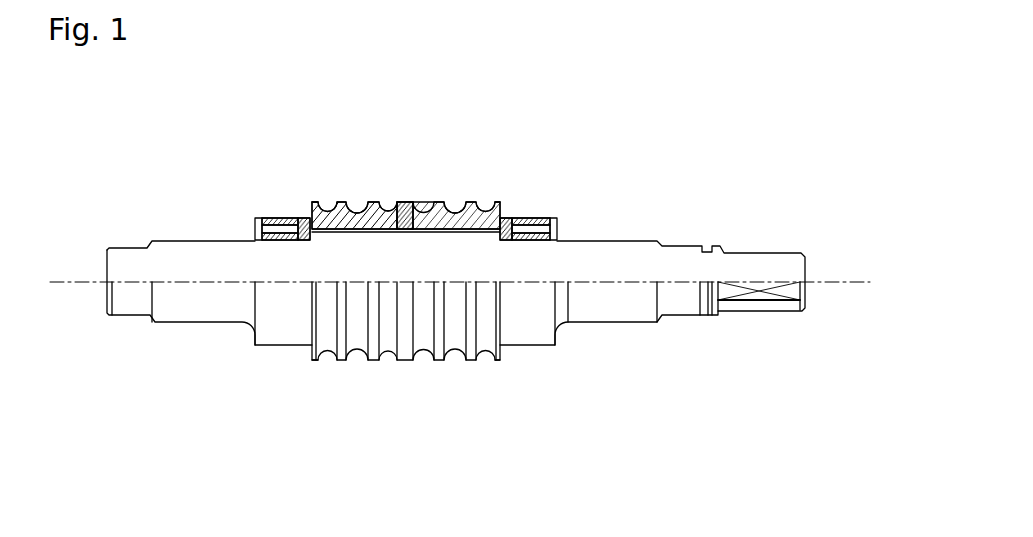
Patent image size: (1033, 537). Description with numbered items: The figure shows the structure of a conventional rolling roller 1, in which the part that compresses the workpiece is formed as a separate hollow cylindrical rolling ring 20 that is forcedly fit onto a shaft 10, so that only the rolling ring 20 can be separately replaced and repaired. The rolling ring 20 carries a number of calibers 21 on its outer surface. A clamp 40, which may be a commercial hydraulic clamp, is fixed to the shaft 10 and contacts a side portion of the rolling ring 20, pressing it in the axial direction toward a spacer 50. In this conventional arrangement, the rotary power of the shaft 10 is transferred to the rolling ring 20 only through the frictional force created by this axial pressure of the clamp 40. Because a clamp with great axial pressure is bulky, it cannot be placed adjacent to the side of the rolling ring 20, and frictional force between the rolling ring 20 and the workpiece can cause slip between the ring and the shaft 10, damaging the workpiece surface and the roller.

The rolling roller 1 is at (460, 165).
The shaft 10 is at (603, 252).
The rolling ring 20 is at (341, 212).
The caliber 21 is at (323, 353).
The clamp 40 is at (280, 222).
The spacer 50 is at (405, 206).